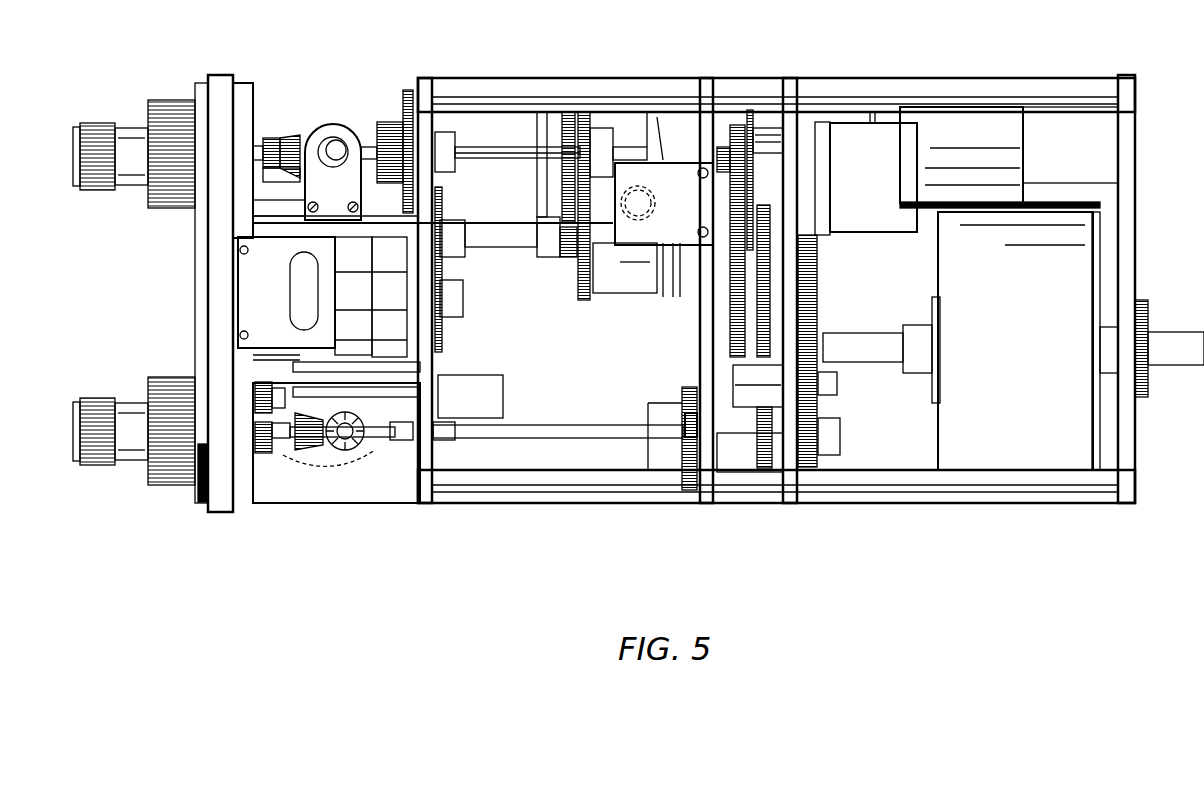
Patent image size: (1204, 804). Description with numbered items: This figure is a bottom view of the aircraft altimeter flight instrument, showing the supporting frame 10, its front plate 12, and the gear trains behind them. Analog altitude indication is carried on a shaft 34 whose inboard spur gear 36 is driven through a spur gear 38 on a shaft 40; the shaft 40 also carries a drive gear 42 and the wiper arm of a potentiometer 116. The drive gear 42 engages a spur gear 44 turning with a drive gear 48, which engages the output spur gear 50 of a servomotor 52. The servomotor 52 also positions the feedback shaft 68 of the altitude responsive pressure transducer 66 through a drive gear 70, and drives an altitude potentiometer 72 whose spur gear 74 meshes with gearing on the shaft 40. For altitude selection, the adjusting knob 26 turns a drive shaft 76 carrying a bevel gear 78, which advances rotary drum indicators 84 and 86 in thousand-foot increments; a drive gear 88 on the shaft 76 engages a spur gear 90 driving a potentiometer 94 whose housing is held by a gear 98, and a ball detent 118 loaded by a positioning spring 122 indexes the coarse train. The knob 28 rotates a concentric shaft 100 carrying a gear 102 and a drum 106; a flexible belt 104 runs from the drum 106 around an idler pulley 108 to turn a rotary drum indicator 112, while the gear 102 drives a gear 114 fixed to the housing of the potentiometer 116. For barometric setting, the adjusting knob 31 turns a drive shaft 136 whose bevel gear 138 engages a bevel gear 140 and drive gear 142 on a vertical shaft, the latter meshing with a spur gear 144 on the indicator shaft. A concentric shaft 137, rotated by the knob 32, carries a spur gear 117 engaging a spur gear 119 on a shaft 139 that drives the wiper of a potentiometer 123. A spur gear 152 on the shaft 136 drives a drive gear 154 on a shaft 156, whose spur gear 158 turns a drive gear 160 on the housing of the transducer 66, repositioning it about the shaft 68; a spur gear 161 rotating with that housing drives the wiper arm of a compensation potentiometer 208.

The supporting frame 10 is at (617, 510).
The front plate 12 is at (218, 512).
The adjusting knob 26 is at (163, 120).
The adjusting knob 28 is at (90, 125).
The adjusting knob 31 is at (102, 450).
The adjusting knob 32 is at (172, 488).
The shaft 34 is at (470, 300).
The spur gear 36 is at (445, 338).
The spur gear 38 is at (442, 205).
The shaft 40 is at (488, 248).
The drive gear 42 is at (740, 125).
The spur gear 44 is at (722, 145).
The drive gear 48 is at (770, 133).
The output spur gear 50 is at (776, 140).
The servomotor 52 is at (973, 140).
The altitude responsive pressure transducer 66 is at (1025, 332).
The feedback positioning shaft 68 is at (866, 340).
The drive gear 70 is at (760, 470).
The altitude potentiometer 72 is at (876, 150).
The spur gear 74 is at (765, 120).
The drive shaft 76 is at (294, 135).
The bevel gear 78 is at (270, 138).
The rotary drum indicator 84 is at (297, 282).
The rotary drum indicator 86 is at (302, 348).
The drive gear 88 is at (405, 112).
The spur gear 90 is at (566, 260).
The potentiometer 94 is at (460, 125).
The gear 98 is at (570, 112).
The shaft 100 is at (498, 147).
The gear 102 is at (597, 112).
The flexible belt 104 is at (513, 230).
The drum 106 is at (637, 120).
The idler pulley 108 is at (655, 196).
The rotary drum indicator 112 is at (345, 235).
The gear 114 is at (594, 298).
The potentiometer 116 is at (638, 268).
The spur gear 117 is at (266, 453).
The ball detent 118 is at (328, 143).
The spur gear 119 is at (273, 386).
The positioning spring 122 is at (340, 130).
The potentiometer 123 is at (498, 395).
The drive shaft 136 is at (553, 430).
The shaft 137 is at (262, 410).
The bevel gear 138 is at (340, 454).
The shaft 139 is at (407, 392).
The bevel gear 140 is at (385, 440).
The drive gear 142 is at (352, 462).
The spur gear 144 is at (298, 455).
The spur gear 152 is at (682, 420).
The drive gear 154 is at (680, 392).
The shaft 156 is at (745, 438).
The spur gear 158 is at (840, 438).
The drive gear 160 is at (822, 290).
The spur gear 161 is at (838, 388).
The potentiometer 208 is at (755, 387).